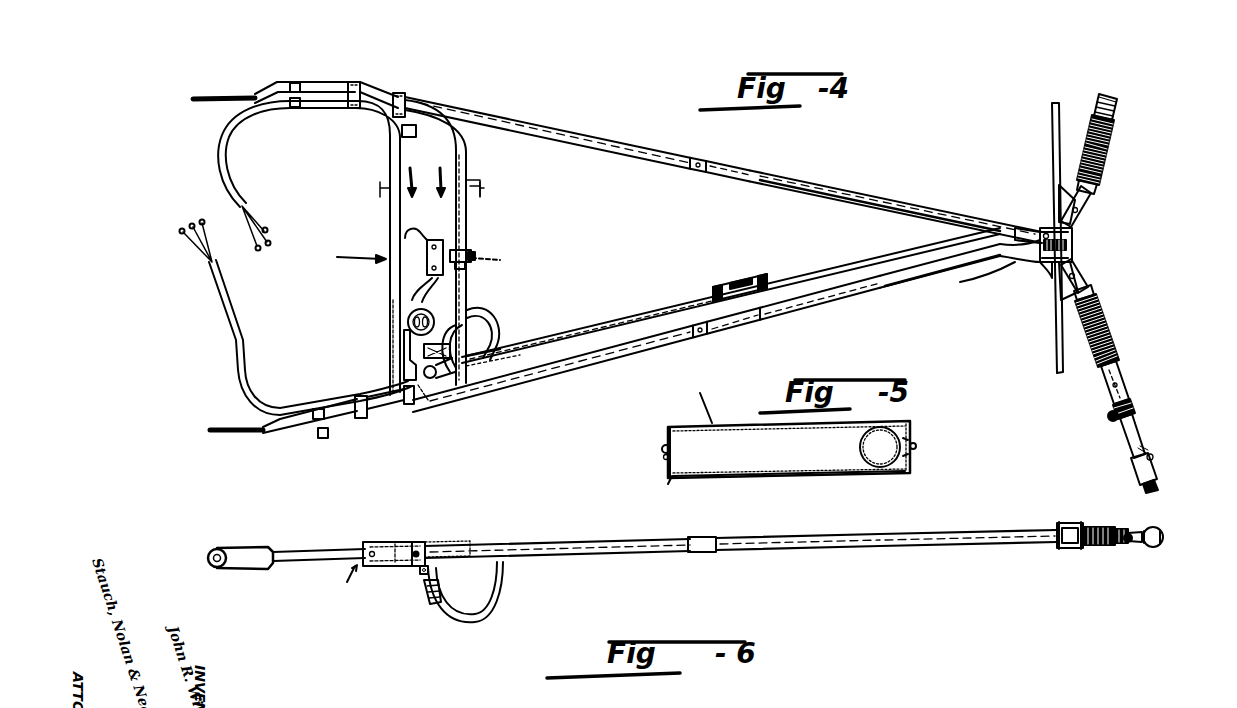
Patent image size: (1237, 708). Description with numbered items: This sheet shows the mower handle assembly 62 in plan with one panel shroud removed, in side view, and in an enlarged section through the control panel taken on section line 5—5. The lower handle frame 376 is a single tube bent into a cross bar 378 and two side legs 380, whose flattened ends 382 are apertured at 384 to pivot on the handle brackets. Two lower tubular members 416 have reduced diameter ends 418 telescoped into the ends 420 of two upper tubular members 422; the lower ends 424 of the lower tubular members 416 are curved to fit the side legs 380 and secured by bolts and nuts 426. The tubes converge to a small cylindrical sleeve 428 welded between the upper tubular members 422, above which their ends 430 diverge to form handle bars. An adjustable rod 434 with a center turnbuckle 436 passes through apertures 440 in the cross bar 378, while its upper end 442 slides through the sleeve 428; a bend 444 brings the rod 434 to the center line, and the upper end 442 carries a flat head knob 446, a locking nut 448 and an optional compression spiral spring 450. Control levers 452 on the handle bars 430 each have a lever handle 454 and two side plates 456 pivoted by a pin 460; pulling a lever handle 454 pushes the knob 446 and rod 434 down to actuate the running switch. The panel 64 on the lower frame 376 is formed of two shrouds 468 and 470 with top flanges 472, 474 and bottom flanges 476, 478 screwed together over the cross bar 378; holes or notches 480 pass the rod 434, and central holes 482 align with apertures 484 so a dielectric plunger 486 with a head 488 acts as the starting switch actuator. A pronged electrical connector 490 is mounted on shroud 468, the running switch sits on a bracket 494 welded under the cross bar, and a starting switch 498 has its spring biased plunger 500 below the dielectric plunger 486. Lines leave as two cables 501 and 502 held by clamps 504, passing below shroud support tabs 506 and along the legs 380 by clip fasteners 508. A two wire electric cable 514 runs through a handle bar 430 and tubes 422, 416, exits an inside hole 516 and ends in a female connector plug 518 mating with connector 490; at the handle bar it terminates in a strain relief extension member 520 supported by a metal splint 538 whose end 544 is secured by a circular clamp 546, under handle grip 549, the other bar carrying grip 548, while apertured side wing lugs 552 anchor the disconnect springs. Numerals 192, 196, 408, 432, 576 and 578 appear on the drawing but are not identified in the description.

In FIG. 4, the section line 5 is at (430, 179).
In FIG. 4, the handle assembly 62 is at (580, 112).
In FIG. 6, the handle assembly 62 is at (502, 526).
In FIG. 4, the panel 64 is at (348, 254).
In FIG. 5, the panel 64 is at (696, 403).
In FIG. 4, the lever 192 is at (440, 380).
In FIG. 4, the link 196 is at (458, 378).
In FIG. 6, the lower handle frame 376 is at (342, 584).
In FIG. 5, the cross bar 378 is at (850, 469).
In FIG. 4, the side legs 380 is at (316, 88).
In FIG. 6, the side legs 380 is at (325, 550).
In FIG. 4, the ends of legs 382 is at (229, 97).
In FIG. 6, the ends of legs 382 is at (252, 549).
In FIG. 6, the aperture 384 is at (228, 548).
In FIG. 4, the left upright tube 408 is at (390, 214).
In FIG. 4, the lower tubular members 416 is at (630, 148).
In FIG. 6, the lower tubular members 416 is at (598, 545).
In FIG. 4, the reduced diameter ends 418 is at (712, 156).
In FIG. 6, the reduced diameter ends 418 is at (702, 544).
In FIG. 4, the ends of upper tubular members 420 is at (745, 168).
In FIG. 6, the ends of upper tubular members 420 is at (742, 538).
In FIG. 4, the upper tubular members 422 is at (855, 185).
In FIG. 6, the upper tubular members 422 is at (895, 534).
In FIG. 4, the lower ends 424 is at (392, 93).
In FIG. 6, the lower ends 424 is at (386, 566).
In FIG. 4, the bolts and nuts 426 is at (356, 81).
In FIG. 6, the bolts and nuts 426 is at (387, 543).
In FIG. 4, the cylindrical sleeve 428 is at (1015, 262).
In FIG. 4, the handle bars 430 is at (1085, 205).
In FIG. 4, the guide rail 432 is at (604, 320).
In FIG. 4, the adjustable rod 434 is at (665, 301).
In FIG. 4, the turnbuckle 436 is at (740, 283).
In FIG. 4, the apertures 440 is at (490, 335).
In FIG. 4, the upper end of rod 442 is at (1045, 232).
In FIG. 4, the bend 444 is at (985, 272).
In FIG. 4, the flat head knob 446 is at (1072, 244).
In FIG. 4, the locking nut 448 is at (1048, 266).
In FIG. 4, the compression spiral spring 450 is at (1020, 230).
In FIG. 4, the control levers 452 is at (1052, 178).
In FIG. 6, the control levers 452 is at (1058, 516).
In FIG. 4, the lever handle 454 is at (1052, 118).
In FIG. 6, the lever handle 454 is at (1062, 550).
In FIG. 6, the side plates 456 is at (1070, 526).
In FIG. 4, the pin 460 is at (1079, 212).
In FIG. 5, the shroud 468 is at (790, 476).
In FIG. 5, the shroud 470 is at (748, 424).
In FIG. 4, the top flange 472 is at (466, 232).
In FIG. 5, the top flange 472 is at (912, 460).
In FIG. 5, the top flange 474 is at (914, 440).
In FIG. 4, the bottom flange 476 is at (390, 286).
In FIG. 5, the bottom flange 476 is at (670, 478).
In FIG. 5, the bottom flange 478 is at (664, 452).
In FIG. 4, the holes or notches 480 is at (495, 350).
In FIG. 4, the holes or notches 482 is at (465, 252).
In FIG. 4, the apertures 484 is at (503, 259).
In FIG. 4, the dielectric plunger 486 is at (475, 254).
In FIG. 4, the head 488 is at (466, 268).
In FIG. 4, the pronged electrical connector 490 is at (420, 299).
In FIG. 6, the pronged electrical connector 490 is at (422, 575).
In FIG. 4, the bracket 494 is at (438, 313).
In FIG. 4, the starting switch 498 is at (415, 242).
In FIG. 4, the spring biased plunger 500 is at (456, 202).
In FIG. 4, the cable 501 is at (267, 104).
In FIG. 4, the cable 502 is at (256, 408).
In FIG. 4, the clamps 504 is at (404, 352).
In FIG. 4, the shroud support tabs 506 is at (412, 137).
In FIG. 4, the clip fasteners 508 is at (295, 102).
In FIG. 4, the two wire electric cable 514 is at (482, 318).
In FIG. 6, the two wire electric cable 514 is at (502, 587).
In FIG. 4, the inside hole 516 is at (512, 354).
In FIG. 6, the female connector plug 518 is at (440, 595).
In FIG. 4, the strain relief extension member 520 is at (1113, 408).
In FIG. 6, the strain relief extension member 520 is at (1122, 528).
In FIG. 4, the metal splint 538 is at (1122, 386).
In FIG. 4, the end of splint 544 is at (1121, 394).
In FIG. 4, the circular clamp 546 is at (1112, 420).
In FIG. 6, the circular clamp 546 is at (1128, 545).
In FIG. 4, the handle grip 548 is at (1105, 151).
In FIG. 4, the handle grip 549 is at (1103, 328).
In FIG. 6, the handle grip 549 is at (1102, 526).
In FIG. 4, the side wing lugs 552 is at (1117, 462).
In FIG. 6, the side wing lugs 552 is at (1152, 528).
In FIG. 4, the elbow 576 is at (452, 162).
In FIG. 4, the fitting 578 is at (480, 195).